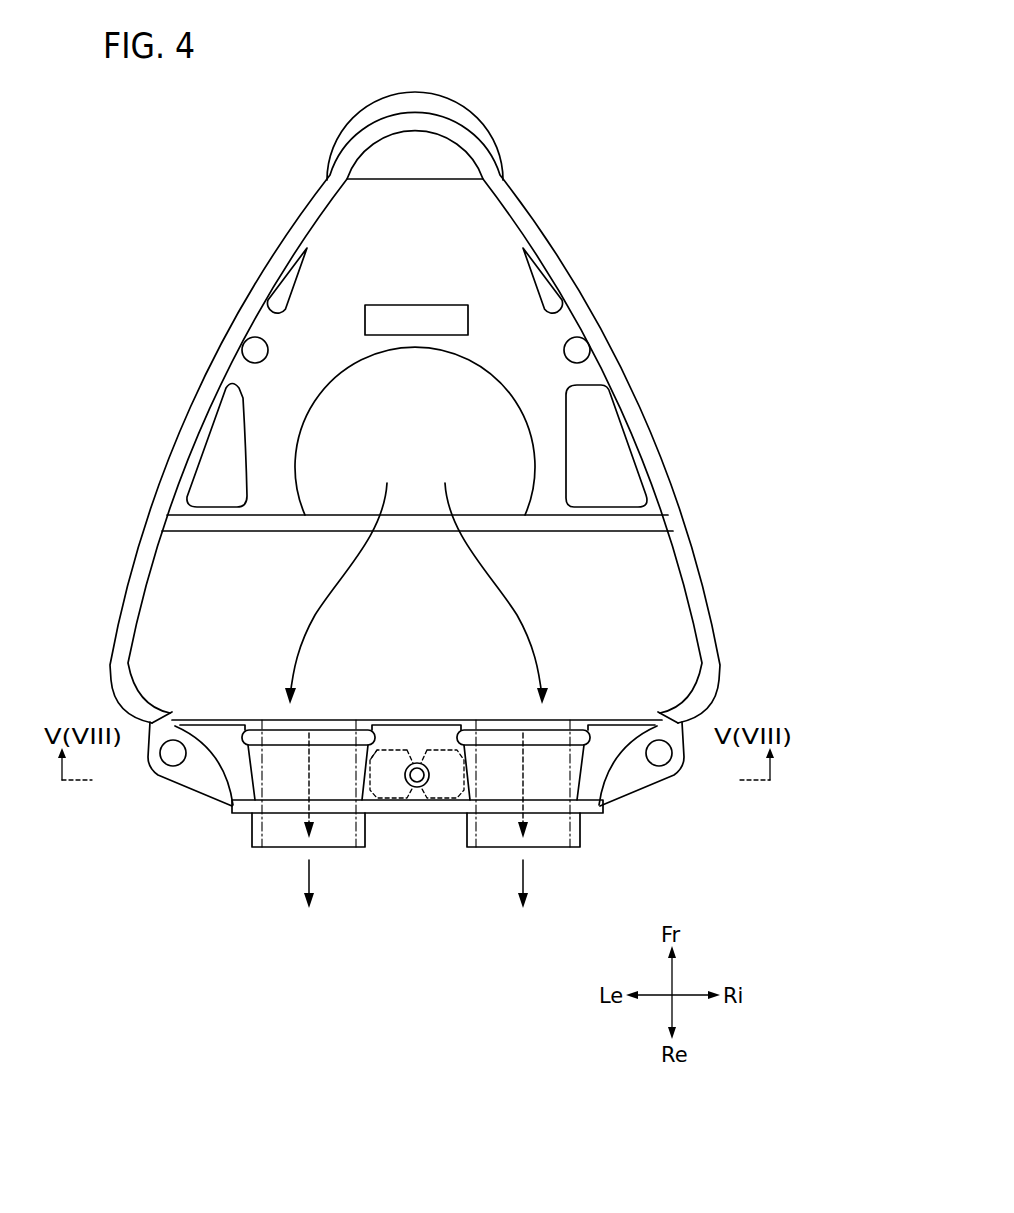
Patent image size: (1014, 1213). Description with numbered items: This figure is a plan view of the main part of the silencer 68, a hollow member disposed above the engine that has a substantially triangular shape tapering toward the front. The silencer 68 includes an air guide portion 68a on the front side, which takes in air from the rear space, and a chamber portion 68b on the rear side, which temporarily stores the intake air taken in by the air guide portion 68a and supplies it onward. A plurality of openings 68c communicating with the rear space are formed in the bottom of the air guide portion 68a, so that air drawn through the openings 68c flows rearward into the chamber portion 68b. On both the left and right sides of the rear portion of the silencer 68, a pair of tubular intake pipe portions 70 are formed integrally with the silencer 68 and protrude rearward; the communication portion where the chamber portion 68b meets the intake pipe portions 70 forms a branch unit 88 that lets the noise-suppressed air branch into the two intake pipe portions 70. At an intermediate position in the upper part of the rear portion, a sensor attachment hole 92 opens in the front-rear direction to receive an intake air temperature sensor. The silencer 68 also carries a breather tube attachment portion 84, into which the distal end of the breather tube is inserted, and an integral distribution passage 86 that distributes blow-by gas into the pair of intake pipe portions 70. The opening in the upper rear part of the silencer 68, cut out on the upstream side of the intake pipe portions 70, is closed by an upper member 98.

The silencer 68 is at (543, 199).
The air guide portion 68a is at (325, 236).
The chamber portion 68b is at (647, 585).
The openings 68c is at (345, 377).
The intake pipe portions 70 is at (251, 828).
The breather tube attachment portion 84 is at (415, 788).
The distribution passage 86 is at (391, 747).
The branch unit 88 is at (563, 713).
The sensor attachment hole 92 is at (418, 719).
The upper member 98 is at (598, 763).